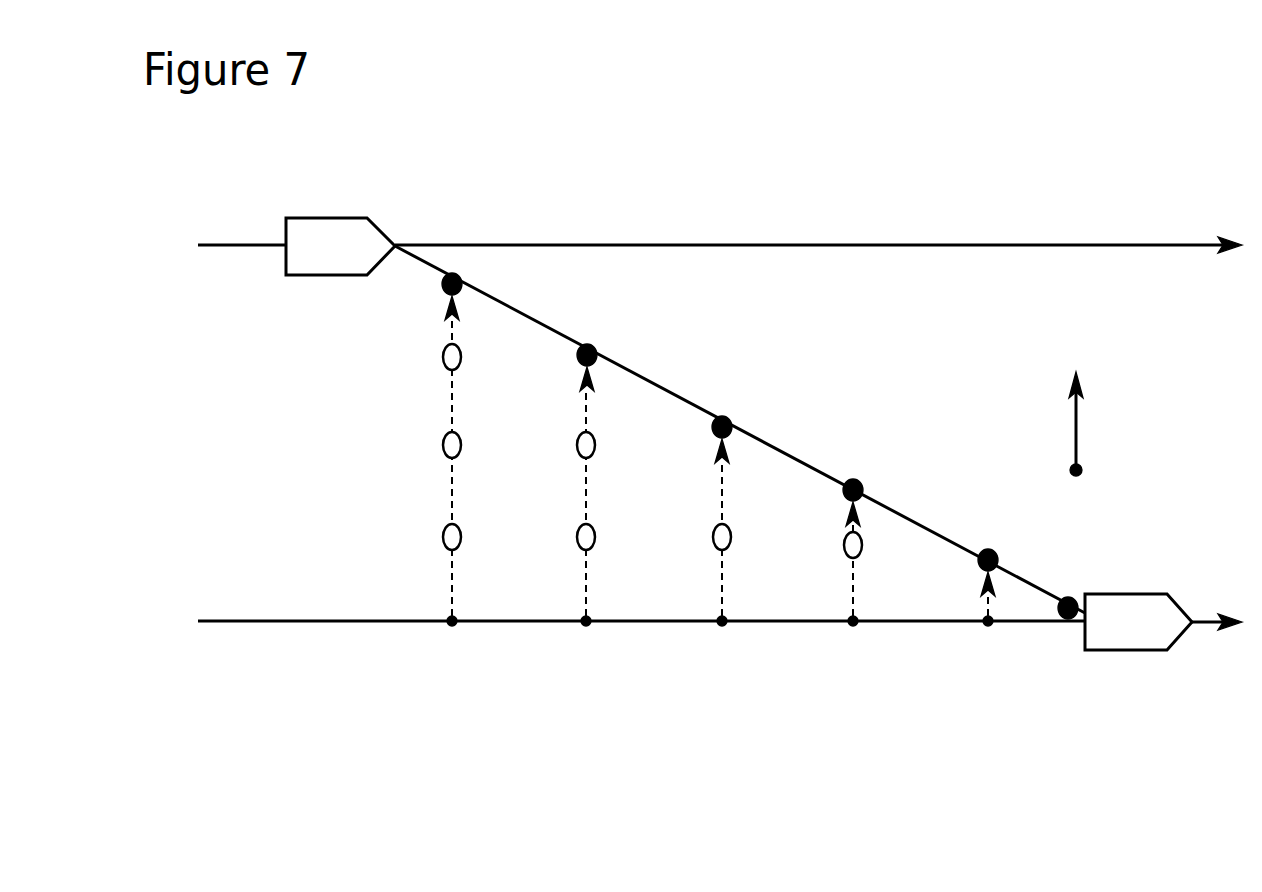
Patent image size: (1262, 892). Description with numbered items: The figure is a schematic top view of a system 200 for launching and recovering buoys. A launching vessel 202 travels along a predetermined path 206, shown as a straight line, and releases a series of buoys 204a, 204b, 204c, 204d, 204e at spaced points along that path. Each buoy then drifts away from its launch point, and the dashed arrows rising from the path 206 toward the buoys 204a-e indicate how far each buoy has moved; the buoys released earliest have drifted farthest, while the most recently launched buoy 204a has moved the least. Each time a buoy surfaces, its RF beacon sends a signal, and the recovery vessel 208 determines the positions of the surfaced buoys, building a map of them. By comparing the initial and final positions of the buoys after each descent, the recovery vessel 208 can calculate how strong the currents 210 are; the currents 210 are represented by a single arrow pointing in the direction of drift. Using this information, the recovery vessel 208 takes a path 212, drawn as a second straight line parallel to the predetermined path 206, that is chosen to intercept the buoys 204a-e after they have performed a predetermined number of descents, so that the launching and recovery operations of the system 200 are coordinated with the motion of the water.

The system 200 is at (767, 132).
The launching vessel 202 is at (1142, 650).
The buoy 204a is at (988, 627).
The buoy 204b is at (853, 627).
The buoy 204c is at (722, 627).
The buoy 204d is at (586, 627).
The buoy 204e is at (452, 627).
The predetermined path 206 is at (322, 622).
The recovery vessel 208 is at (323, 218).
The currents 210 is at (1076, 423).
The path 212 is at (877, 245).